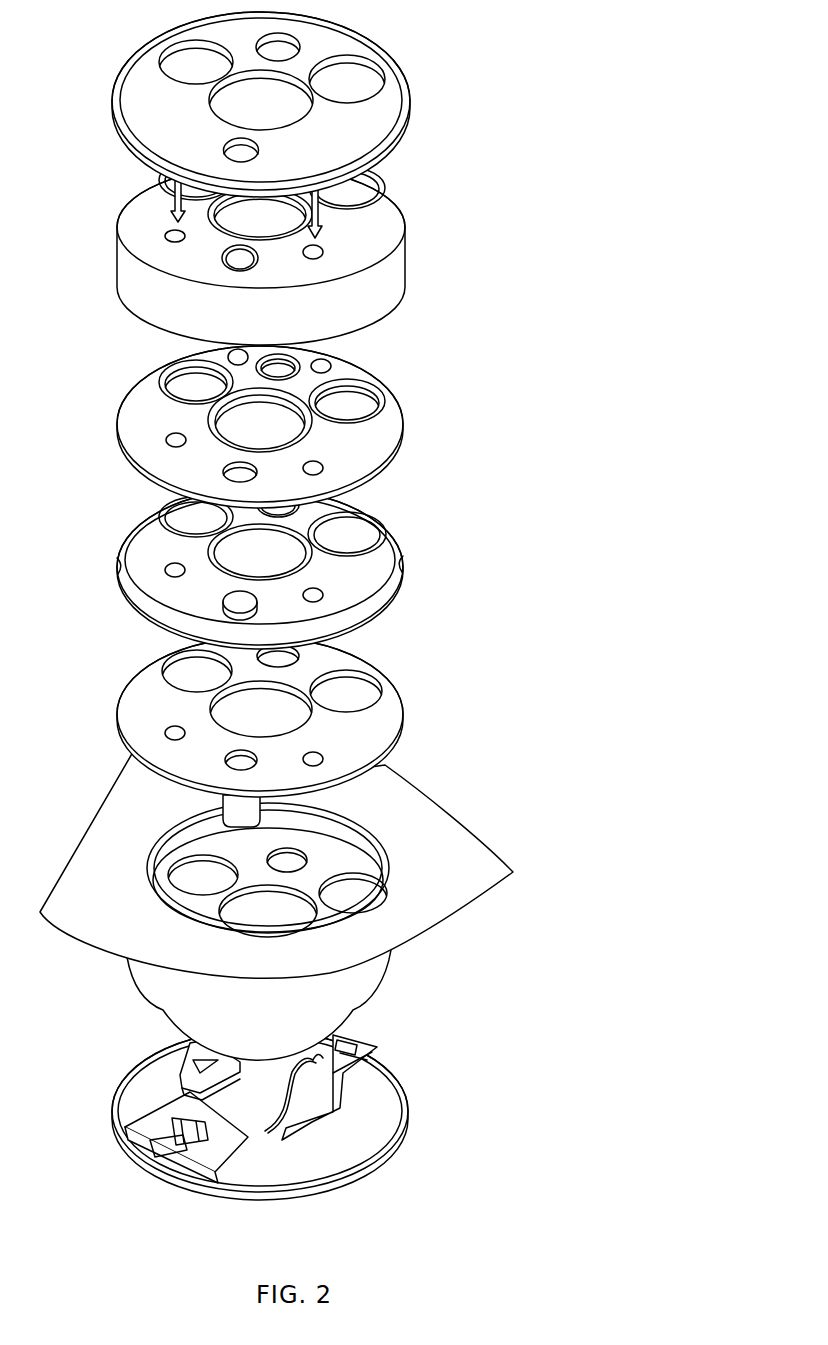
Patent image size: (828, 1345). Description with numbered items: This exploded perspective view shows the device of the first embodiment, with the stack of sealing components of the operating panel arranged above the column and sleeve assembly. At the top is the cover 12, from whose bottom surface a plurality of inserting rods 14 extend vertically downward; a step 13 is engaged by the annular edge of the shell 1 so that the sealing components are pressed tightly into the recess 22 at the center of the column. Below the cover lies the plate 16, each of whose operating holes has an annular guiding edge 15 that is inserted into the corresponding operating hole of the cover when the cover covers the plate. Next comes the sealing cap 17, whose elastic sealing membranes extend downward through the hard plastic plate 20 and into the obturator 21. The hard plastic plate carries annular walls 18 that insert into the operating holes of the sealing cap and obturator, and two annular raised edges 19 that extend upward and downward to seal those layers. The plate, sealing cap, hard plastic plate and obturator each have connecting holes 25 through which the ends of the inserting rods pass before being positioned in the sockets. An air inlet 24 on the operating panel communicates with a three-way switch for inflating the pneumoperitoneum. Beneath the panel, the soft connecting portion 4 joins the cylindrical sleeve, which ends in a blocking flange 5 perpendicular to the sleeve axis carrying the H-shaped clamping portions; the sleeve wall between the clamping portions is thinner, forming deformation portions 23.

The shell 1 is at (445, 893).
The soft connecting portion 4 is at (330, 997).
The blocking flange 5 is at (310, 1115).
The cover 12 is at (307, 104).
The step 13 is at (402, 120).
The inserting rod 14 is at (335, 203).
The annular guiding edge 15 is at (378, 200).
The plate 16 is at (270, 252).
The sealing cap 17 is at (363, 447).
The annular wall 18 is at (368, 517).
The annular raised edge 19 is at (402, 550).
The hard plastic plate 20 is at (311, 555).
The obturator 21 is at (383, 718).
The recess 22 is at (347, 862).
The deformation portion 23 is at (319, 1133).
The air inlet 24 is at (237, 261).
The connecting hole 25 is at (168, 235).